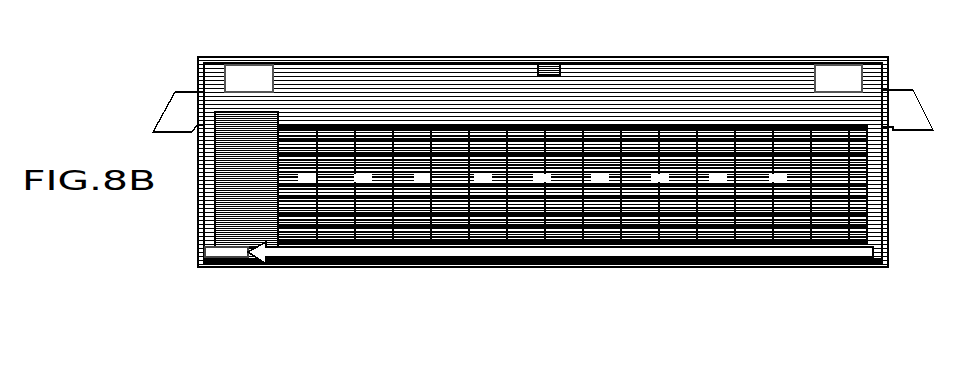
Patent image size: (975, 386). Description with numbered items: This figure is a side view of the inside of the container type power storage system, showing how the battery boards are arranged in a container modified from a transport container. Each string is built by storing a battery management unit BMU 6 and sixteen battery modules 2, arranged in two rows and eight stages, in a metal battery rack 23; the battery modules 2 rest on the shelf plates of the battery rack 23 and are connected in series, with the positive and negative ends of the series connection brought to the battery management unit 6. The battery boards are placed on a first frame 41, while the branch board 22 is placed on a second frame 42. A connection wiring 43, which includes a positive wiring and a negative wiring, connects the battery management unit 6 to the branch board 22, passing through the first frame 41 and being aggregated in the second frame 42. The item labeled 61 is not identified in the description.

The battery module 2 is at (436, 243).
The battery management unit 6 is at (313, 240).
The branch board 22 is at (196, 245).
The battery rack 23 is at (367, 124).
The first frame 41 is at (757, 262).
The second frame 42 is at (225, 257).
The connection wiring 43 is at (555, 262).
The housing cover 61 is at (858, 57).